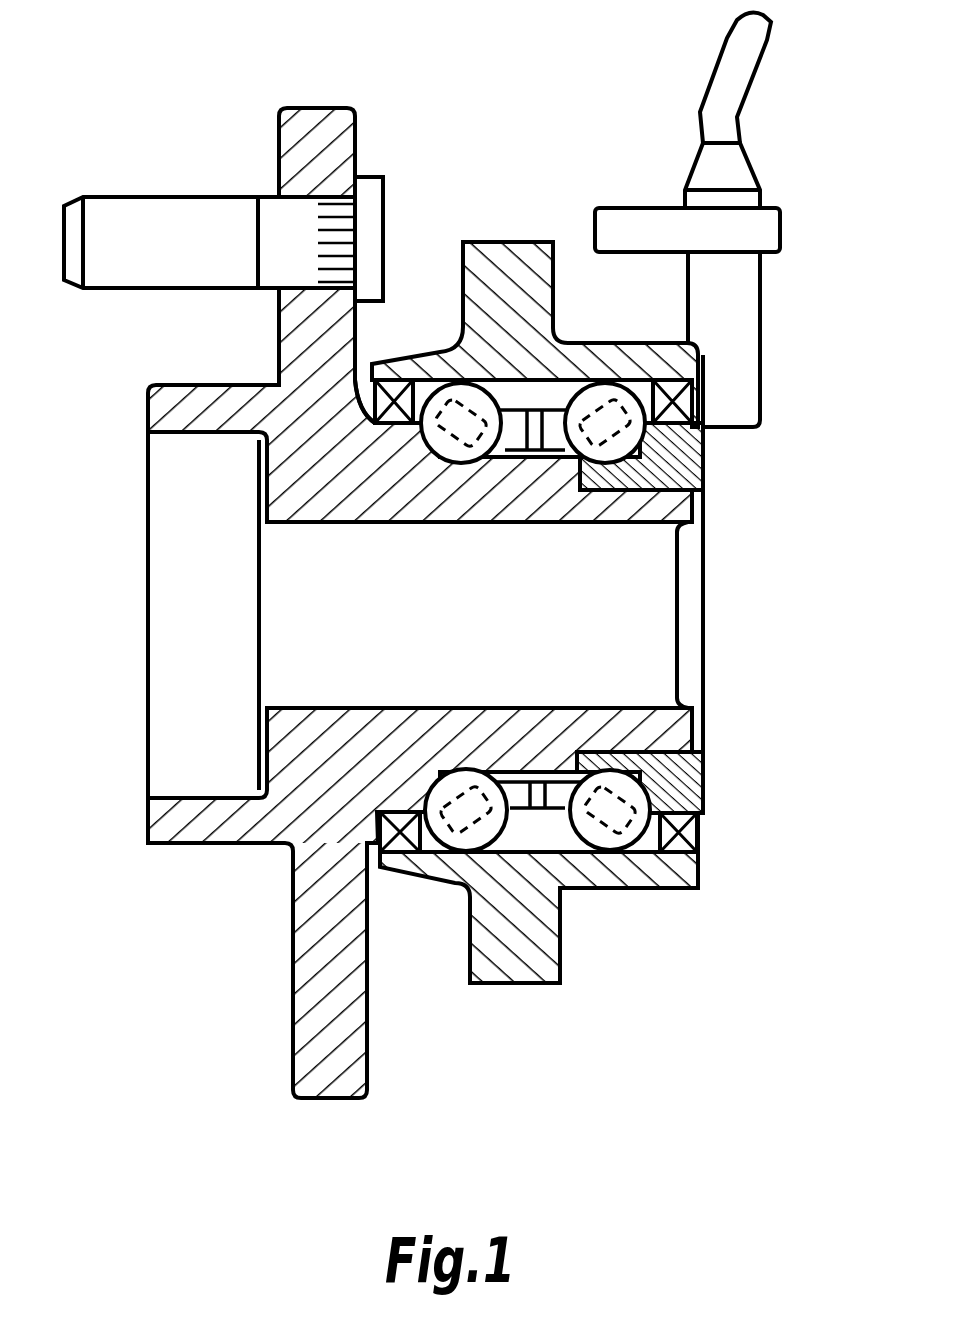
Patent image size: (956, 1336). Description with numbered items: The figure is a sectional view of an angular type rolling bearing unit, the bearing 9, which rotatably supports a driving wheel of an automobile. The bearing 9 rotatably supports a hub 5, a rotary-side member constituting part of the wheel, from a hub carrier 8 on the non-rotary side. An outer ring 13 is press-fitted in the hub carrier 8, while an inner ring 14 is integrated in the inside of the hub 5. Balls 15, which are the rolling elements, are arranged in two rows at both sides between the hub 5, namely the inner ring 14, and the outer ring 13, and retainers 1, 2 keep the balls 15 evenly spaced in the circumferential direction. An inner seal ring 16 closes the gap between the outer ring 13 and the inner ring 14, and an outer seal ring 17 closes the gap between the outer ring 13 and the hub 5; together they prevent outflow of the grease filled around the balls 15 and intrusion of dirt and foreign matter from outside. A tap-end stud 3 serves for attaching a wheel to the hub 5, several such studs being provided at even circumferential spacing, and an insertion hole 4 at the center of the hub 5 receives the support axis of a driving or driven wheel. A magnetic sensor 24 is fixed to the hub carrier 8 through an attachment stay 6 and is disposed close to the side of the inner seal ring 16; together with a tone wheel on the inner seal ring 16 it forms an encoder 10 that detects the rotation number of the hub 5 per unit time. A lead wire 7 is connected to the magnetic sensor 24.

The retainer 1 is at (524, 828).
The retainer 2 is at (553, 817).
The tap-end stud 3 is at (113, 214).
The insertion hole 4 is at (296, 576).
The hub 5 is at (310, 993).
The attachment stay 6 is at (622, 223).
The lead wire 7 is at (733, 82).
The hub carrier 8 is at (535, 629).
The bearing 9 is at (663, 878).
The encoder 10 is at (710, 434).
The outer ring 13 is at (597, 888).
The inner ring 14 is at (707, 770).
The balls 15 is at (599, 390).
The inner seal ring 16 is at (698, 833).
The outer seal ring 17 is at (388, 356).
The magnetic sensor 24 is at (745, 365).